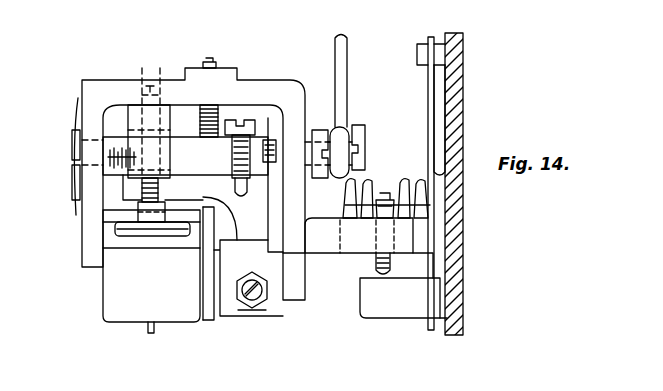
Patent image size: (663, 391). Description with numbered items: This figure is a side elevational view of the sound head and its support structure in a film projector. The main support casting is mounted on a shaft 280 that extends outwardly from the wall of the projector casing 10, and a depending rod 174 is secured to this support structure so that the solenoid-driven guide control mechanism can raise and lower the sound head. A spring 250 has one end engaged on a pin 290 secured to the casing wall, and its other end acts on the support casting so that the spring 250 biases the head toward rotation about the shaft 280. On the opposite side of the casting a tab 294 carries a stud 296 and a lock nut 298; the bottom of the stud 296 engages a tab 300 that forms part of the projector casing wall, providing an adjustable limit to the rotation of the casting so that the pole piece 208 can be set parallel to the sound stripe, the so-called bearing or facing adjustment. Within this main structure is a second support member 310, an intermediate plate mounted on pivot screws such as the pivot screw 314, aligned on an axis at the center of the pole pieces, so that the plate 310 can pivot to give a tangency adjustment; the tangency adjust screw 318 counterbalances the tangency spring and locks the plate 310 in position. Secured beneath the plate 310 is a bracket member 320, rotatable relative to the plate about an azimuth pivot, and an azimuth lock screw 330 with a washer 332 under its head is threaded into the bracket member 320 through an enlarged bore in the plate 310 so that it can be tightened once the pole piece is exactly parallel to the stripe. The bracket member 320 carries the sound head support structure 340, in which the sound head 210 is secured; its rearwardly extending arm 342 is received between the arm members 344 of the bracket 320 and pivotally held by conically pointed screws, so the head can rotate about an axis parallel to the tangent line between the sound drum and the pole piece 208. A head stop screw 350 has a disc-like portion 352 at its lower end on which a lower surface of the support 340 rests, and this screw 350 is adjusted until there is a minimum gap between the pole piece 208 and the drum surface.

The projector casing 10 is at (463, 78).
The rod 174 is at (352, 85).
The pole piece 208 is at (148, 330).
The sound head 210 is at (103, 298).
The spring 250 is at (428, 99).
The shaft 280 is at (432, 198).
The pin 290 is at (437, 44).
The tab 294 is at (360, 240).
The stud 296 is at (372, 263).
The lock nut 298 is at (407, 178).
The tab 300 is at (392, 318).
The second support member 310 is at (180, 146).
The pivot screw 314 is at (82, 84).
The tangency adjust screw 318 is at (213, 60).
The bracket member 320 is at (241, 320).
The azimuth lock screw 330 is at (250, 118).
The washer 332 is at (270, 138).
The sound head support structure 340 is at (203, 312).
The rearwardly extending arm 342 is at (213, 310).
The arm members 344 is at (285, 300).
The head stop screw 350 is at (152, 80).
The disc-like portion 352 is at (139, 238).